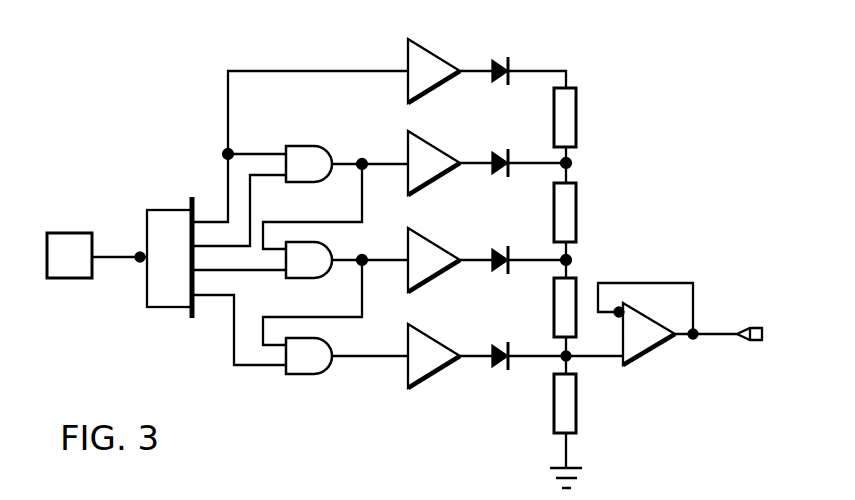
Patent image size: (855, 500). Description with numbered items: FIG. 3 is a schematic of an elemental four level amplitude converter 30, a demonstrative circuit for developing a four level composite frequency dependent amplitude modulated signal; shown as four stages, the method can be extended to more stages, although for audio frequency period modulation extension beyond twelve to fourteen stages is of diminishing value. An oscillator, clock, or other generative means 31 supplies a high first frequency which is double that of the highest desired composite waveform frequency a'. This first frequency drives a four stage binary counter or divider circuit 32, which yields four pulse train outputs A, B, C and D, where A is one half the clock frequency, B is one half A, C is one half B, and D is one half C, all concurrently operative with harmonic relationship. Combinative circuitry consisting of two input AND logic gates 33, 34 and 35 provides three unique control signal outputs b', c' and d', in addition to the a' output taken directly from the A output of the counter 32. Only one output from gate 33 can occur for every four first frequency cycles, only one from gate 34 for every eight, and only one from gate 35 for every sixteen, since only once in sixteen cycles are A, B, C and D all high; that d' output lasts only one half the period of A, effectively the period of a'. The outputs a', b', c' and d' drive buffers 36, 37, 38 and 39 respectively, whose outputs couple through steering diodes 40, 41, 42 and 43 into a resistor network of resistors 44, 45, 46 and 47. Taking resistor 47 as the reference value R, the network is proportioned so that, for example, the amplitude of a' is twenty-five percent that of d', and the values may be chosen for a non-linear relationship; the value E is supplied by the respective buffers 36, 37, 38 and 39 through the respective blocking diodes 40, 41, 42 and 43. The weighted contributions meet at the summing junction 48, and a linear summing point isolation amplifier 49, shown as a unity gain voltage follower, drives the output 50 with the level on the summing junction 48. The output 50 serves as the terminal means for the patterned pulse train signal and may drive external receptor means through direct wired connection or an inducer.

The tone generating circuit 30 is at (168, 110).
The oscillator 31 is at (48, 224).
The four stage binary counter 32 is at (139, 212).
The AND logic gate 33 is at (310, 157).
The AND logic gate 34 is at (305, 264).
The AND logic gate 35 is at (310, 362).
The buffer 36 is at (433, 67).
The buffer 37 is at (433, 160).
The buffer 38 is at (433, 258).
The buffer 39 is at (433, 354).
The steering diode 40 is at (515, 62).
The steering diode 41 is at (516, 156).
The steering diode 42 is at (517, 251).
The steering diode 43 is at (516, 346).
The resistor 44 is at (580, 112).
The resistor 45 is at (580, 201).
The resistor 46 is at (580, 283).
The resistor 47 is at (580, 412).
The summing junction 48 is at (553, 362).
The linear summing point isolation amplifier 49 is at (644, 334).
The output 50 is at (767, 325).